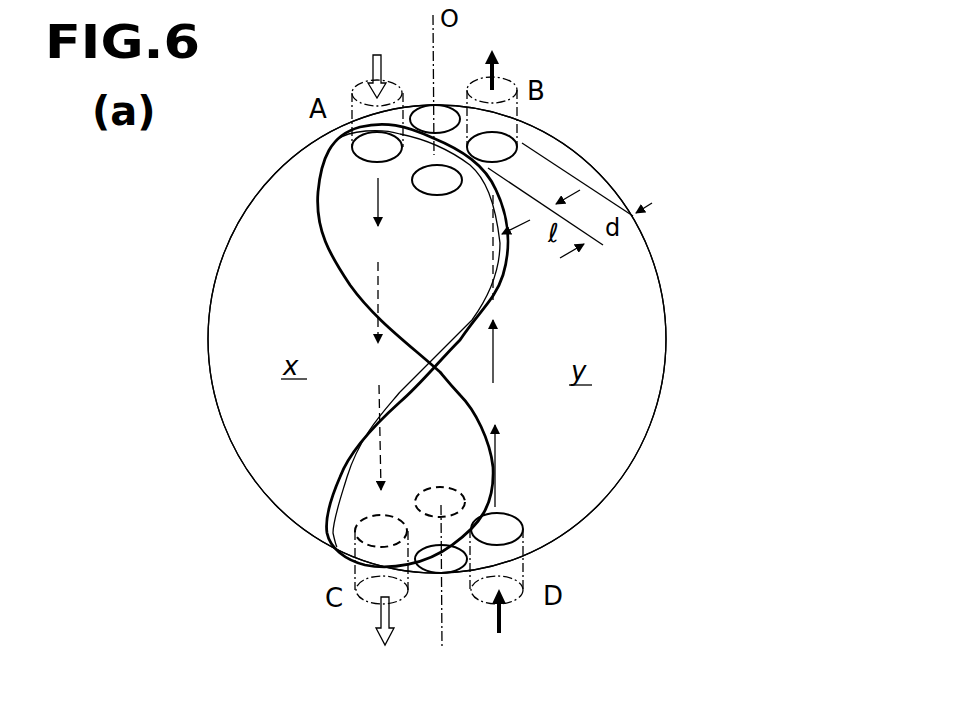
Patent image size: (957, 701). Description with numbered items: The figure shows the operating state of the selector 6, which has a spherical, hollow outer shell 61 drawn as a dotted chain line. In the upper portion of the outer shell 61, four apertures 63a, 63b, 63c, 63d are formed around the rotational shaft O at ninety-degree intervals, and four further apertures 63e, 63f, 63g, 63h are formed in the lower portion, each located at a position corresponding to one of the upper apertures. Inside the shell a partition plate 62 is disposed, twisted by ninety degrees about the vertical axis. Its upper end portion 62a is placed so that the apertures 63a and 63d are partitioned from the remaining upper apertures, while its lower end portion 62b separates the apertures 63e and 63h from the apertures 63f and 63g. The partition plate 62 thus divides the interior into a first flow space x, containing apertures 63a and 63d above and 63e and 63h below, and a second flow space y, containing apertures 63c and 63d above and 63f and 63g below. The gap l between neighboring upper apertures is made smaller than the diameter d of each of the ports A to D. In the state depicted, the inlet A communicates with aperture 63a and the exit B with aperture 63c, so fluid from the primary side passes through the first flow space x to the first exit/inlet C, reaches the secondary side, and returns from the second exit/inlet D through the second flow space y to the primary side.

The selector 6 is at (655, 259).
The outer shell 61 is at (664, 380).
The partition plate 62 is at (508, 272).
The upper end portion 62a is at (441, 112).
The lower end portion 62b is at (333, 548).
The aperture 63a is at (360, 164).
The aperture 63b is at (437, 195).
The aperture 63c is at (519, 144).
The aperture 63d is at (432, 104).
The aperture 63e is at (352, 518).
The aperture 63f is at (432, 575).
The aperture 63g is at (524, 521).
The aperture 63h is at (438, 487).